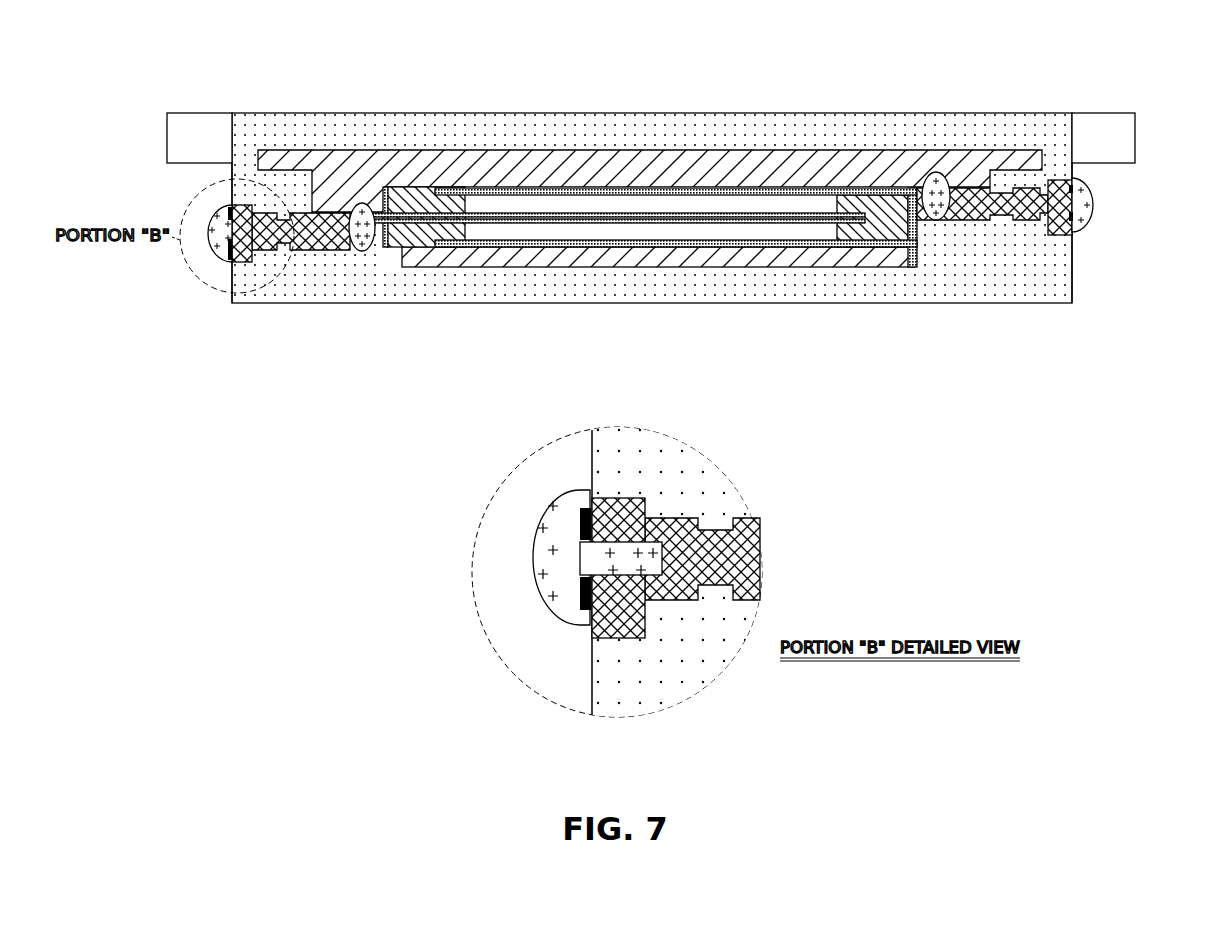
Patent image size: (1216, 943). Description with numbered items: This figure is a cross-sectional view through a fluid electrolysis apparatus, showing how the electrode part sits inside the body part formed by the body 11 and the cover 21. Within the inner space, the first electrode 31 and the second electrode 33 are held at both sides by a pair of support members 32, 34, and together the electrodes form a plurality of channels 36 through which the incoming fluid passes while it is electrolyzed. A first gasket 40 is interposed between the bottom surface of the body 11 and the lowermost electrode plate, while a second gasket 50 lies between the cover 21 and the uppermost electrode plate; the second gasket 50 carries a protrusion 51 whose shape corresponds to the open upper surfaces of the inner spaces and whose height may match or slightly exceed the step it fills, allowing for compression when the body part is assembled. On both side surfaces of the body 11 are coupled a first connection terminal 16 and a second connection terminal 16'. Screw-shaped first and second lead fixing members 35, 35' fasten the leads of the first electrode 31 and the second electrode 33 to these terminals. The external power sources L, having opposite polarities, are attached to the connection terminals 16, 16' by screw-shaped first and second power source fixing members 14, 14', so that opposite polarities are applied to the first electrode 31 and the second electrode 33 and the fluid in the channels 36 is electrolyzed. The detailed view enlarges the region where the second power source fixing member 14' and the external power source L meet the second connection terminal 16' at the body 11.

The body 11 is at (342, 292).
The cover 21 is at (337, 122).
The first power source fixing member 14 is at (702, 220).
The second power source fixing member 14' is at (508, 564).
The first connection terminal 16 is at (650, 270).
The second connection terminal 16' is at (747, 559).
The first electrode 31 is at (593, 188).
The support member 32 is at (888, 196).
The second electrode 33 is at (537, 224).
The support member 34 is at (424, 188).
The first lead fixing member 35 is at (916, 260).
The second lead fixing member 35' is at (387, 288).
The channel 36 is at (762, 232).
The first gasket 40 is at (627, 262).
The second gasket 50 is at (640, 150).
The protrusion 51 is at (1000, 170).
The external power source L is at (585, 610).